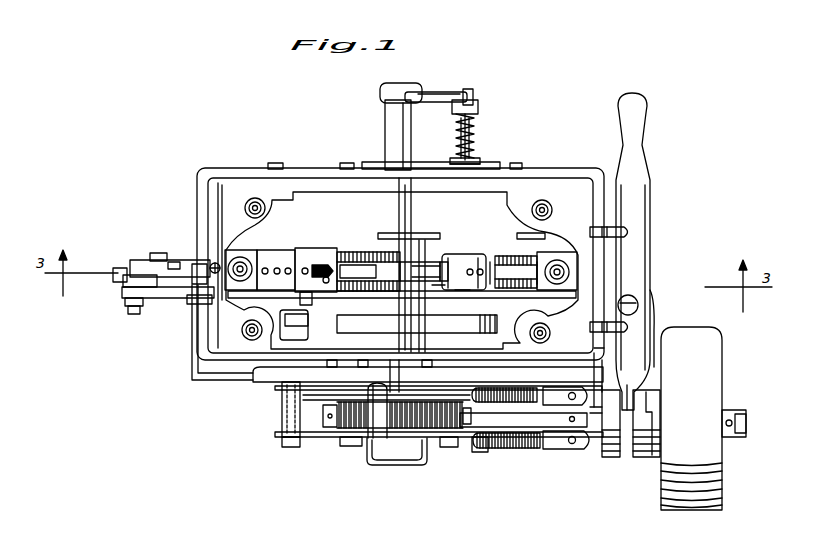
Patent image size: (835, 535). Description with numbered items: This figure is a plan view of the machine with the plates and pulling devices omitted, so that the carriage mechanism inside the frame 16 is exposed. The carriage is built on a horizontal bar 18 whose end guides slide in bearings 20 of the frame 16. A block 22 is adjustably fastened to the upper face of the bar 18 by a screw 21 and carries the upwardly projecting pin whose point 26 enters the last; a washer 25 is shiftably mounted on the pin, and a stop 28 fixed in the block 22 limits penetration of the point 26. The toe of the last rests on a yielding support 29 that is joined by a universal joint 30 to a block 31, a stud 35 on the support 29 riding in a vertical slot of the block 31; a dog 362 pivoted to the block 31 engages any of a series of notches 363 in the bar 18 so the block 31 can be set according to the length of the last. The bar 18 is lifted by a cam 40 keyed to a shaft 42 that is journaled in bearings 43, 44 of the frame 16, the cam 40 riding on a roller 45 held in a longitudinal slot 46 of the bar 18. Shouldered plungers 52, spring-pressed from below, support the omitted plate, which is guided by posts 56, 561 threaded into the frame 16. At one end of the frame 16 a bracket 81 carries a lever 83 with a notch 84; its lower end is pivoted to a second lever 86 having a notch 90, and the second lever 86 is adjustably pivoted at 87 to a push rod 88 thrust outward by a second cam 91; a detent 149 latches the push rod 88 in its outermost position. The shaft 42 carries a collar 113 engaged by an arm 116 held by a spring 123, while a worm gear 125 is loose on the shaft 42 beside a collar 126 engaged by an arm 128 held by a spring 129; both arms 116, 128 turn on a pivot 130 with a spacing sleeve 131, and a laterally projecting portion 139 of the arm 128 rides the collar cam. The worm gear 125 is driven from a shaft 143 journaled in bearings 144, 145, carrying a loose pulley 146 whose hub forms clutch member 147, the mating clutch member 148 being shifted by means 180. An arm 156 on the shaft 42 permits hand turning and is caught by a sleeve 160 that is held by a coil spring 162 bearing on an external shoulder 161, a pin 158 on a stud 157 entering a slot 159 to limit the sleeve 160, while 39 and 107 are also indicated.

The frame 16 is at (250, 166).
The horizontal bar 18 is at (368, 263).
The bearings 20 is at (246, 258).
The screw 21 is at (292, 260).
The block 22 is at (320, 260).
The washer 25 is at (358, 271).
The point 26 is at (330, 254).
The stop 28 is at (326, 286).
The yielding support 29 is at (464, 272).
The universal joint 30 is at (494, 290).
The block 31 is at (456, 292).
The stud 35 is at (437, 298).
The pin 39 is at (480, 258).
The cam 40 is at (522, 287).
The shaft 42 is at (385, 129).
The bearing 43 is at (378, 235).
The bearing 44 is at (426, 345).
The roller 45 is at (441, 256).
The longitudinal slot 46 is at (358, 296).
The shouldered plunger 52 is at (259, 200).
The post 56 is at (212, 265).
The bracket 81 is at (152, 256).
The lever 83 is at (190, 272).
The notch 84 is at (178, 261).
The second lever 86 is at (124, 280).
The pivot 87 is at (128, 312).
The push rod 88 is at (172, 300).
The notch 90 is at (135, 264).
The second cam 91 is at (417, 324).
The pin 107 is at (630, 230).
The collar 113 is at (398, 466).
The arm 116 is at (310, 440).
The spring 123 is at (578, 422).
The worm gear 125 is at (448, 449).
The collar 126 is at (392, 386).
The arm 128 is at (275, 389).
The spring 129 is at (502, 396).
The pivot 130 is at (288, 449).
The spacing sleeve 131 is at (282, 422).
The laterally projecting portion 139 is at (380, 442).
The shaft 143 is at (523, 419).
The bearing 144 is at (345, 447).
The bearing 145 is at (610, 457).
The loose pulley 146 is at (722, 366).
The clutch member 147 is at (655, 458).
The clutch member 148 is at (650, 457).
The detent 149 is at (202, 303).
The arm 156 is at (421, 92).
The stud 157 is at (456, 155).
The pin 158 is at (474, 146).
The slot 159 is at (474, 133).
The sleeve 160 is at (501, 124).
The external shoulder 161 is at (466, 124).
The coil spring 162 is at (474, 160).
The shifting means 180 is at (640, 281).
The dog 362 is at (448, 258).
The notches 363 is at (512, 262).
The post 561 is at (568, 273).